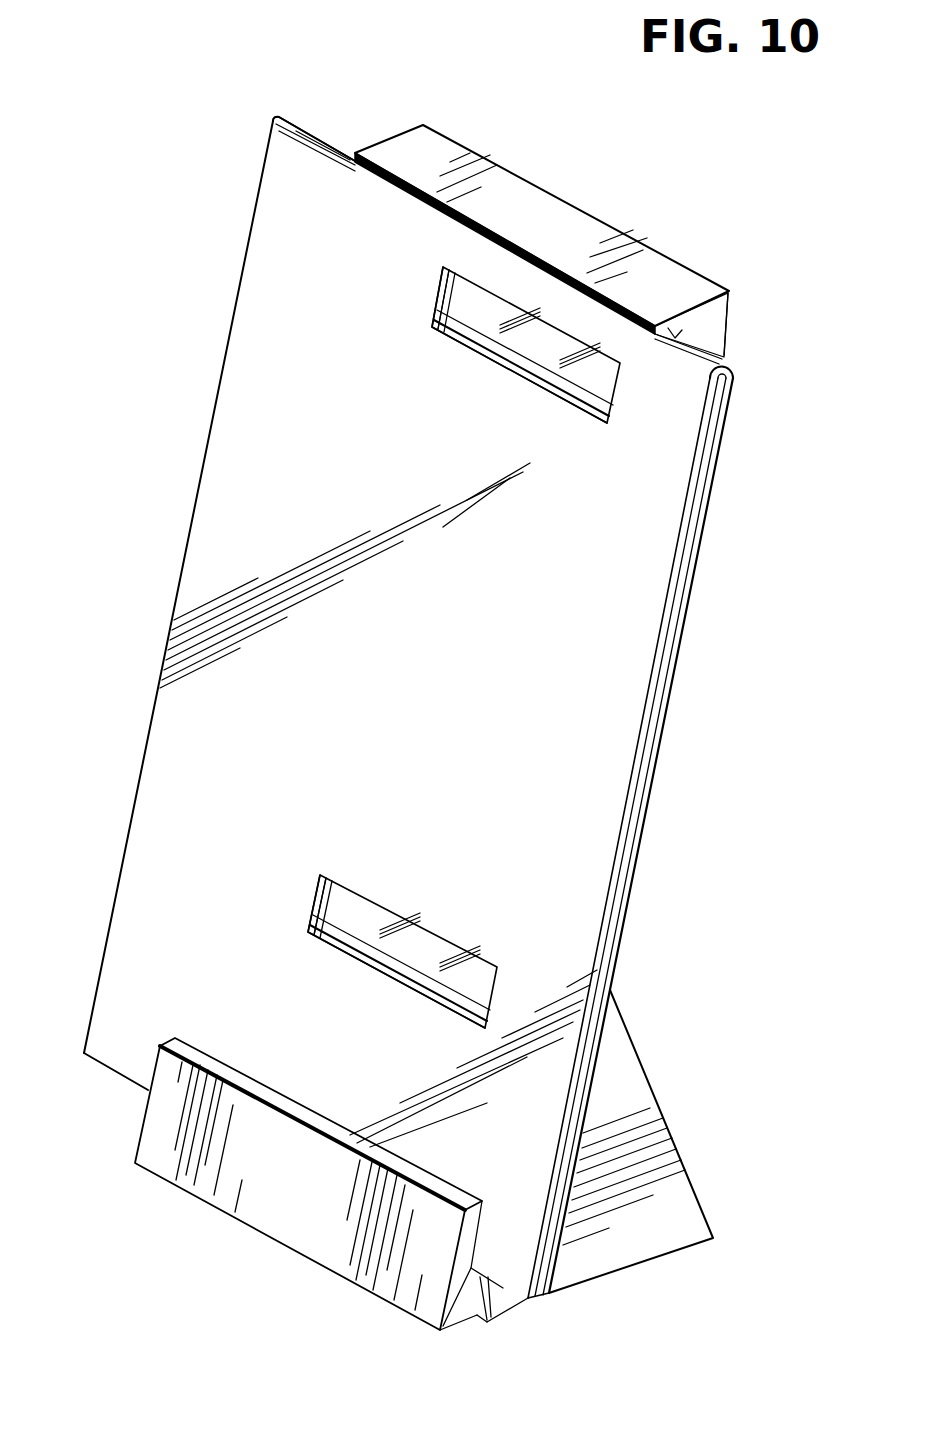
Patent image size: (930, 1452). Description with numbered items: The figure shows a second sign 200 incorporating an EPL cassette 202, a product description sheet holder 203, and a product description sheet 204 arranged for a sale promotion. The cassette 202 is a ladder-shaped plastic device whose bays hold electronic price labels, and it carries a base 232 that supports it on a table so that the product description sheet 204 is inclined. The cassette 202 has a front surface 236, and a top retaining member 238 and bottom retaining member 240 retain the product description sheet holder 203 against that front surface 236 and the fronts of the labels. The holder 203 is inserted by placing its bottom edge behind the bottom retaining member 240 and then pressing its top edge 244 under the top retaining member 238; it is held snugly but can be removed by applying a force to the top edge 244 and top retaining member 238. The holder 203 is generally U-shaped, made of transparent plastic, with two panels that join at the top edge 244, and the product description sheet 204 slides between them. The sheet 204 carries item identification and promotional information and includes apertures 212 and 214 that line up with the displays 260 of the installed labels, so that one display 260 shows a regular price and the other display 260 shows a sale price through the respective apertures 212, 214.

The sign 200 is at (177, 502).
The EPL cassette 202 is at (698, 268).
The product description sheet holder 203 is at (335, 133).
The product description sheet 204 is at (678, 623).
The aperture 212 is at (432, 321).
The aperture 214 is at (310, 932).
The base 232 is at (695, 1191).
The front surface of cassette 236 is at (715, 328).
The top retaining member 238 is at (557, 217).
The bottom retaining member 240 is at (157, 1142).
The top edge 244 is at (296, 124).
The display 260 is at (460, 287).